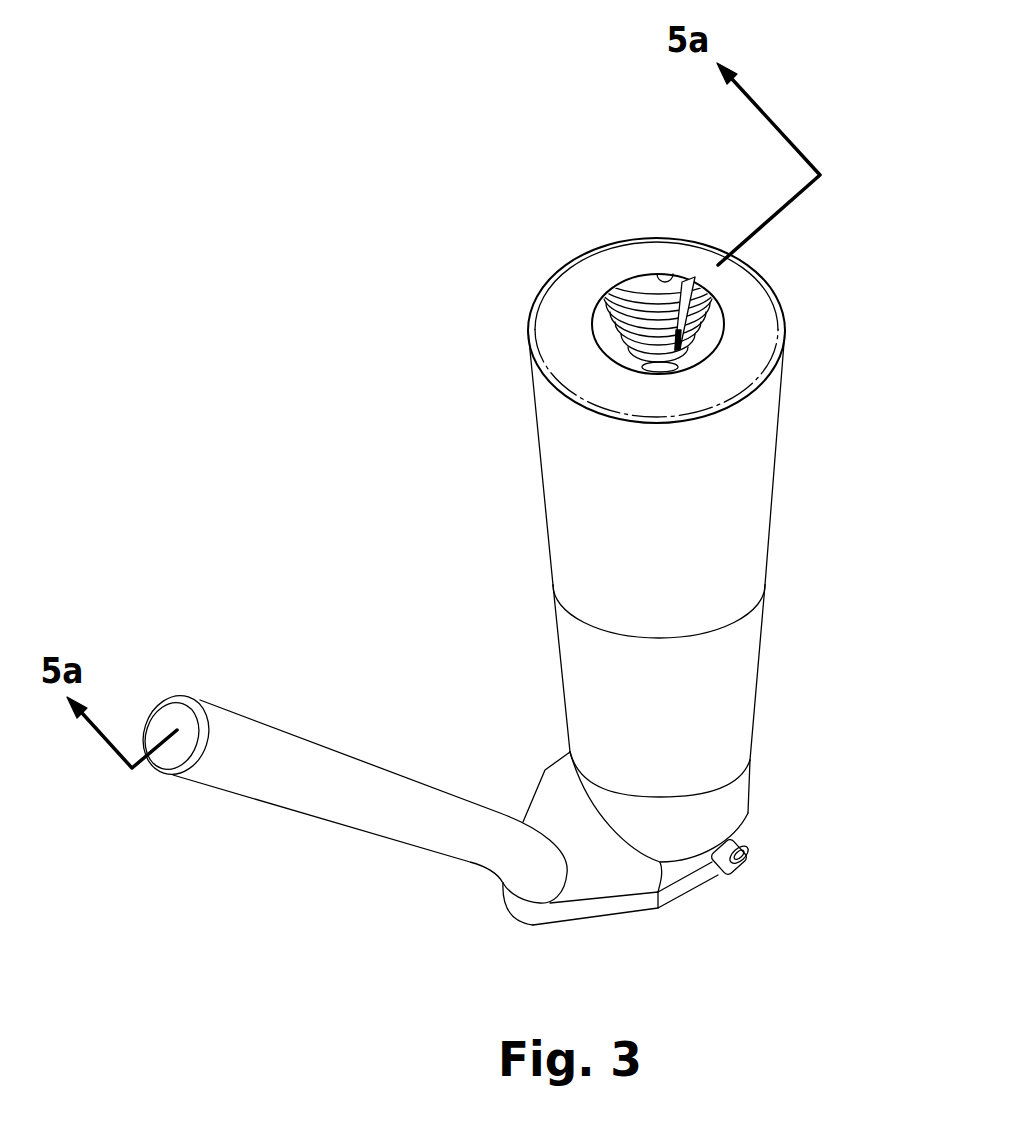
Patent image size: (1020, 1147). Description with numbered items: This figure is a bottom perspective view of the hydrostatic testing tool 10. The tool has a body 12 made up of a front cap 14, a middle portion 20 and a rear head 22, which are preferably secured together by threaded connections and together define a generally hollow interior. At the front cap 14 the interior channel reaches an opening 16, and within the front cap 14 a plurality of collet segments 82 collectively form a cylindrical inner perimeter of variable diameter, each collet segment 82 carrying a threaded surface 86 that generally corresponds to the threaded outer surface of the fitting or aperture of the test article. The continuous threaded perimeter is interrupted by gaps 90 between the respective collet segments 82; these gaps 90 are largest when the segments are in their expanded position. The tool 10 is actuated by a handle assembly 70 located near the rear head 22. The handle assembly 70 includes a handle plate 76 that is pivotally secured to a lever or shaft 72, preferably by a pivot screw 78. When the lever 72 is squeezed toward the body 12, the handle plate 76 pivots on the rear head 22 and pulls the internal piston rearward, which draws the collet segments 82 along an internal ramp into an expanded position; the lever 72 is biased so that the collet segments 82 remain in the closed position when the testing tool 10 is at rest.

The hydrostatic testing tool 10 is at (703, 518).
The body 12 is at (786, 610).
The front cap 14 is at (777, 494).
The opening 16 is at (672, 277).
The middle portion 20 is at (759, 697).
The rear head 22 is at (756, 778).
The handle assembly 70 is at (499, 832).
The lever 72 is at (263, 803).
The handle plate 76 is at (677, 898).
The pivot screw 78 is at (748, 855).
The collet segments 82 is at (628, 290).
The threaded surface 86 is at (608, 310).
The gaps 90 is at (690, 292).